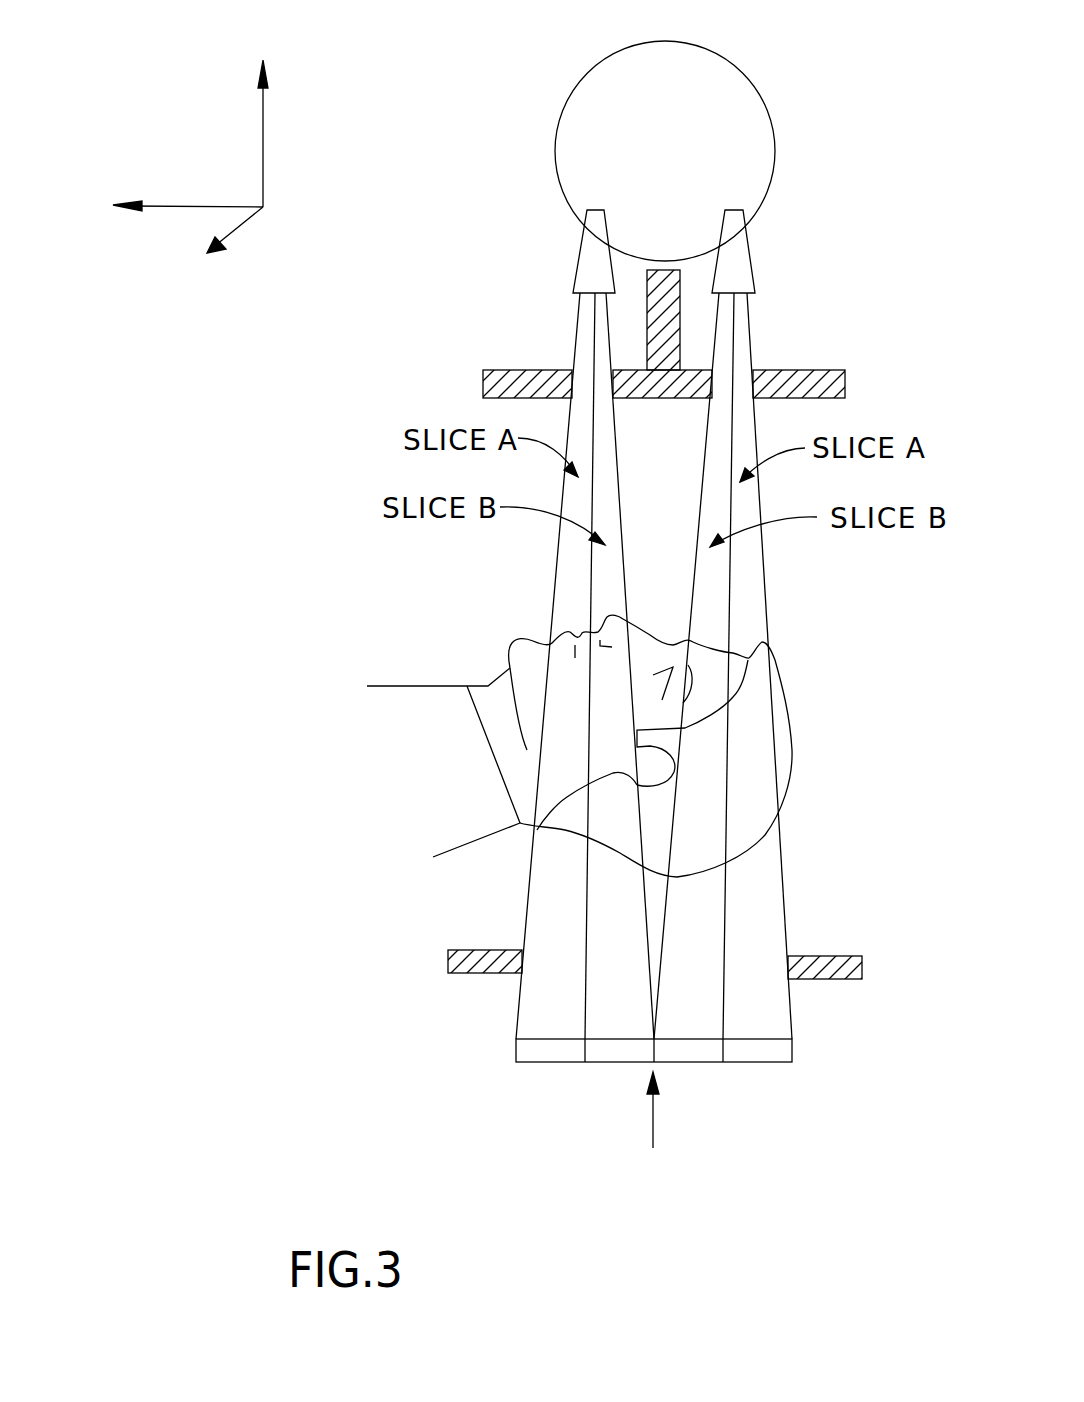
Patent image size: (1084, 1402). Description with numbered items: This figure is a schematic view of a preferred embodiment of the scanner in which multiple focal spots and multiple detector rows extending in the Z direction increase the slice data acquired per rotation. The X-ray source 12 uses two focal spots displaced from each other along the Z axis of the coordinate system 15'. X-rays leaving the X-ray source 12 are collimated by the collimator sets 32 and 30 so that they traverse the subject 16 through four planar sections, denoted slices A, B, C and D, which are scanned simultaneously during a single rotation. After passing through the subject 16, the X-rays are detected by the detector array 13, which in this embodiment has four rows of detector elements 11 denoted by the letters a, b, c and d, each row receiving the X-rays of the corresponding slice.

The X-ray source 12 is at (722, 97).
The collimator set 32 is at (815, 372).
The collimator set 30 is at (832, 957).
The detector elements 11 is at (795, 1052).
The detector array 13 is at (655, 1130).
The subject 16 is at (437, 700).
The coordinate system 15' is at (211, 153).